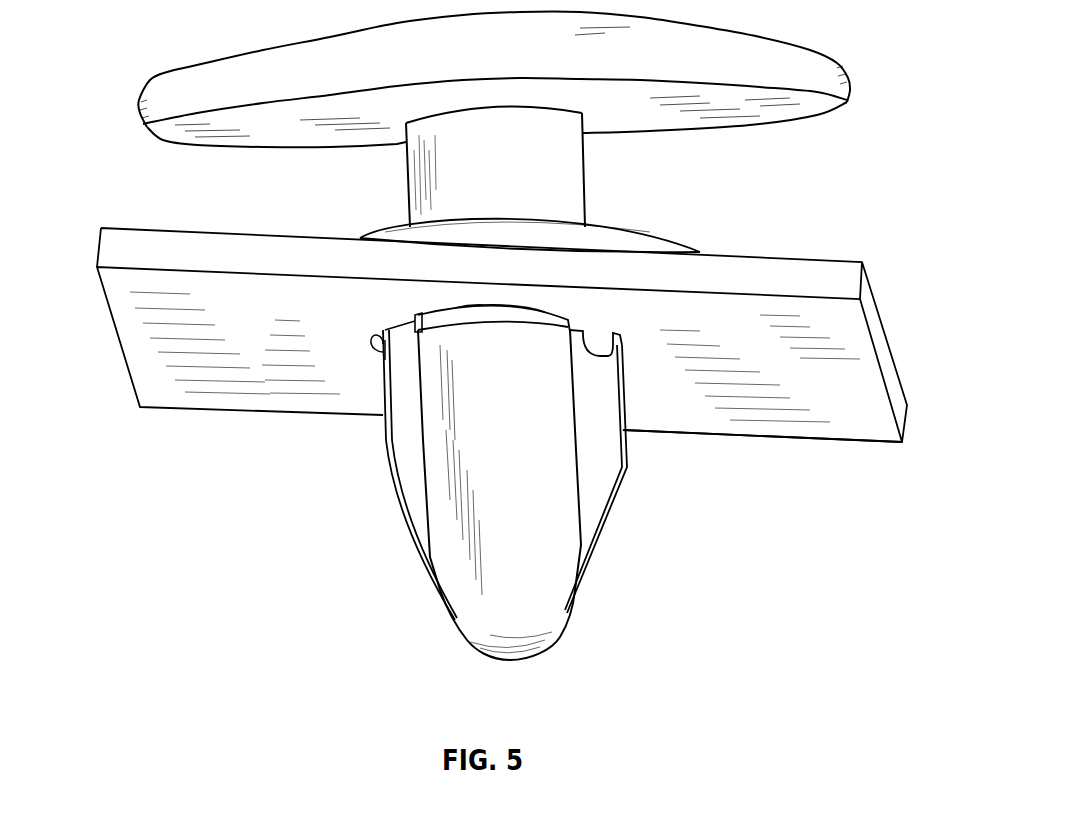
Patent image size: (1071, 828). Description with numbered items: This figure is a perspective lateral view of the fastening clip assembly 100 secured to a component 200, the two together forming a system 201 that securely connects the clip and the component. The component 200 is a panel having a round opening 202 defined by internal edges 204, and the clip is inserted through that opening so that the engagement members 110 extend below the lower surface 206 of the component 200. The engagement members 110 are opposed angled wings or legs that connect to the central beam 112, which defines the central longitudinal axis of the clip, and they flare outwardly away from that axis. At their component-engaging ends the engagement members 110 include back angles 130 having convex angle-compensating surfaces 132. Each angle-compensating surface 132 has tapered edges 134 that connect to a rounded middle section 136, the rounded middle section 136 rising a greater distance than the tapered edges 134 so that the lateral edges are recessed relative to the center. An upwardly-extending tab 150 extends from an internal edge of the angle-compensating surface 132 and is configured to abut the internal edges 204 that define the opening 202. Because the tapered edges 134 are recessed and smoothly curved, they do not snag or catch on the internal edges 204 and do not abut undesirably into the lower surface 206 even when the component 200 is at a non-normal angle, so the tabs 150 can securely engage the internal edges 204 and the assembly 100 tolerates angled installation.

The fastening clip assembly 100 is at (862, 72).
The system 201 is at (137, 57).
The upwardly-extending tab 150 is at (440, 313).
The component 200 is at (845, 275).
The lower surface 206 is at (736, 440).
The engagement member 110 is at (531, 516).
The back angle 130 is at (428, 313).
The tapered edge 134 is at (417, 325).
The rounded middle section 136 is at (470, 309).
The angle-compensating surface 132 is at (482, 309).
The central beam 112 is at (395, 490).
The round opening 202 is at (371, 340).
The internal edges 204 is at (384, 354).